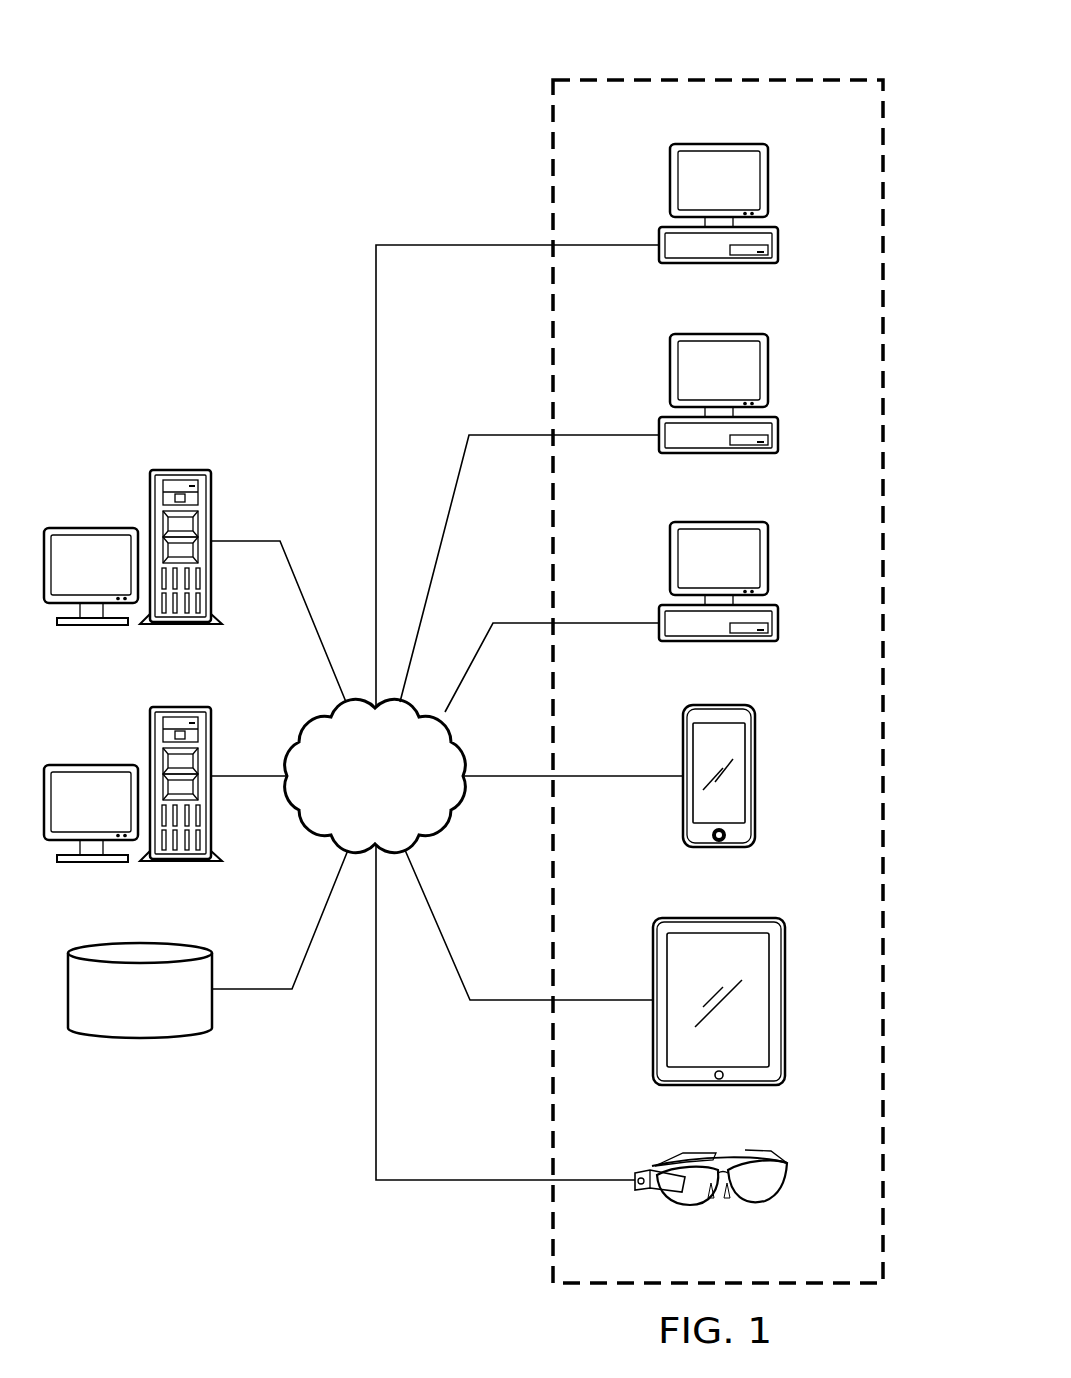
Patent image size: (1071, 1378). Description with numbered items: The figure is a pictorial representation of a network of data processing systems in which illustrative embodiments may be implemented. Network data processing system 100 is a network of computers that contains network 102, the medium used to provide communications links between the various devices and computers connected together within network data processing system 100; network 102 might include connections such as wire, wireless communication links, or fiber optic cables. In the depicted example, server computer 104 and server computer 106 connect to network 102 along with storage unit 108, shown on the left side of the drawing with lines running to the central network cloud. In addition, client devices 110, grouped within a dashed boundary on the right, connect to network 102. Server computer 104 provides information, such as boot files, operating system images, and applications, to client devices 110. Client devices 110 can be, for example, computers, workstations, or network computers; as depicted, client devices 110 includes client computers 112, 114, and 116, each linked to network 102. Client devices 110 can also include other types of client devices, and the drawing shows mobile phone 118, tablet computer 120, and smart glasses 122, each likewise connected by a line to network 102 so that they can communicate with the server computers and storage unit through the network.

The network data processing system 100 is at (146, 228).
The network 102 is at (398, 813).
The server computer 104 is at (90, 527).
The server computer 106 is at (90, 764).
The storage unit 108 is at (138, 1038).
The client devices 110 is at (792, 72).
The client computer 112 is at (768, 179).
The client computer 114 is at (768, 369).
The client computer 116 is at (768, 557).
The mobile phone 118 is at (755, 795).
The tablet computer 120 is at (785, 1012).
The smart glasses 122 is at (785, 1185).